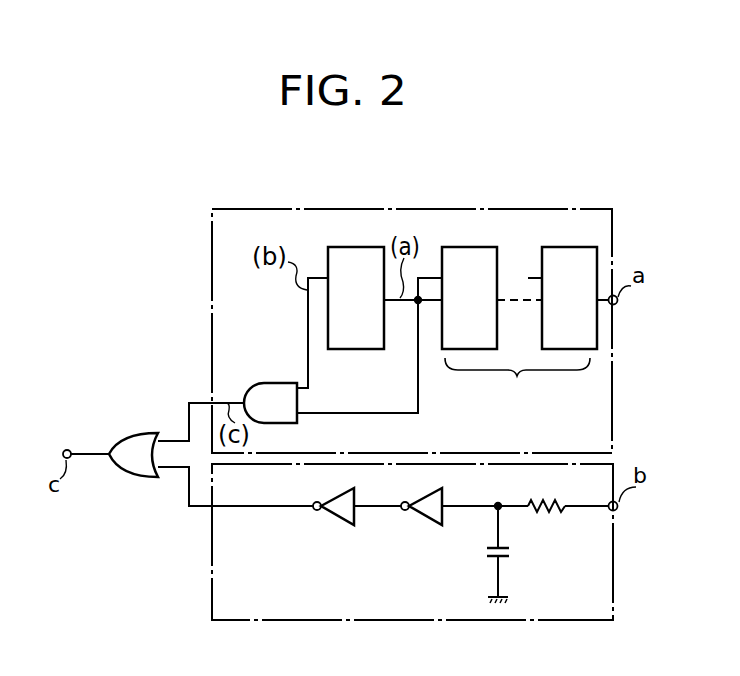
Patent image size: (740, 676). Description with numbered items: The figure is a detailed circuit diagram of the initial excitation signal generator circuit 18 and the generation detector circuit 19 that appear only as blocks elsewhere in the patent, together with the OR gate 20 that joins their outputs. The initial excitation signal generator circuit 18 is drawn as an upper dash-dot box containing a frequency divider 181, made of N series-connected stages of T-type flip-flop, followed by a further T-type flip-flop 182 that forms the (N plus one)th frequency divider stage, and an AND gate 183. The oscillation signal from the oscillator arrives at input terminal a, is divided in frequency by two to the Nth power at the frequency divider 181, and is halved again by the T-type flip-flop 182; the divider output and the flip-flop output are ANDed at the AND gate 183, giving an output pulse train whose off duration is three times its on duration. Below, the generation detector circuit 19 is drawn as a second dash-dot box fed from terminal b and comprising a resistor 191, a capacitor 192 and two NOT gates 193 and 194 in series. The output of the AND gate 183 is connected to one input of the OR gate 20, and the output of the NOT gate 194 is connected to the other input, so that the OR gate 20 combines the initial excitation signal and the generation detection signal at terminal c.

The initial excitation signal generator circuit 18 is at (507, 208).
The generation detector circuit 19 is at (290, 621).
The OR gate 20 is at (132, 478).
The frequency divider 181 is at (519, 326).
The T-type flip-flop 182 is at (335, 350).
The AND gate 183 is at (272, 381).
The resistor 191 is at (553, 512).
The capacitor 192 is at (486, 552).
The NOT gate 193 is at (429, 521).
The NOT gate 194 is at (340, 521).